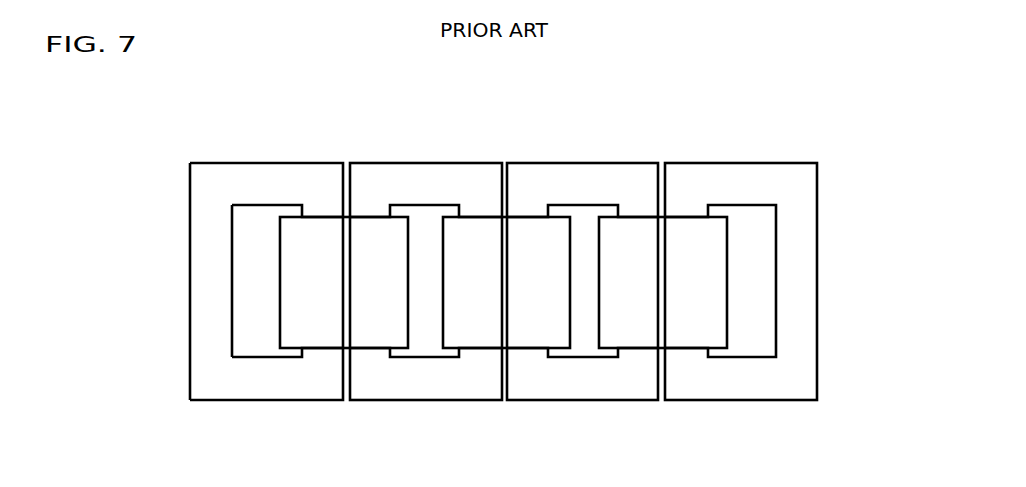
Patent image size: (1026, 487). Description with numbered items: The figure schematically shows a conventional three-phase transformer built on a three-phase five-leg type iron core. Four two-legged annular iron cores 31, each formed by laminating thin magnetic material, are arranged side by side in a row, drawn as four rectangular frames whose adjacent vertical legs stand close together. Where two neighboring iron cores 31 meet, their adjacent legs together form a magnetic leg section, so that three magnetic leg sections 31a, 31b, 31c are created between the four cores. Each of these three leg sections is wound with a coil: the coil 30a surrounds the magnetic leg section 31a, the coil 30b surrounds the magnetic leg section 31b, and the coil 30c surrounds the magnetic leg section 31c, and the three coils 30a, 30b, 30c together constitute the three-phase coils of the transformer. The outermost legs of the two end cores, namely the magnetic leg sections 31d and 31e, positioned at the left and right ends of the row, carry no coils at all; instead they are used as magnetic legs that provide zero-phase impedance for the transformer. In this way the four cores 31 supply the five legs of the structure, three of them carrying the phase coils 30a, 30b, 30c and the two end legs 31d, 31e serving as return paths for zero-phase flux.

The two-legged annular iron core 31 is at (213, 163).
The magnetic leg section 31a is at (323, 210).
The magnetic leg section 31b is at (480, 212).
The magnetic leg section 31c is at (637, 213).
The magnetic leg section 31d is at (205, 285).
The magnetic leg section 31e is at (805, 275).
The coil 30a is at (328, 333).
The coil 30b is at (485, 333).
The coil 30c is at (690, 333).